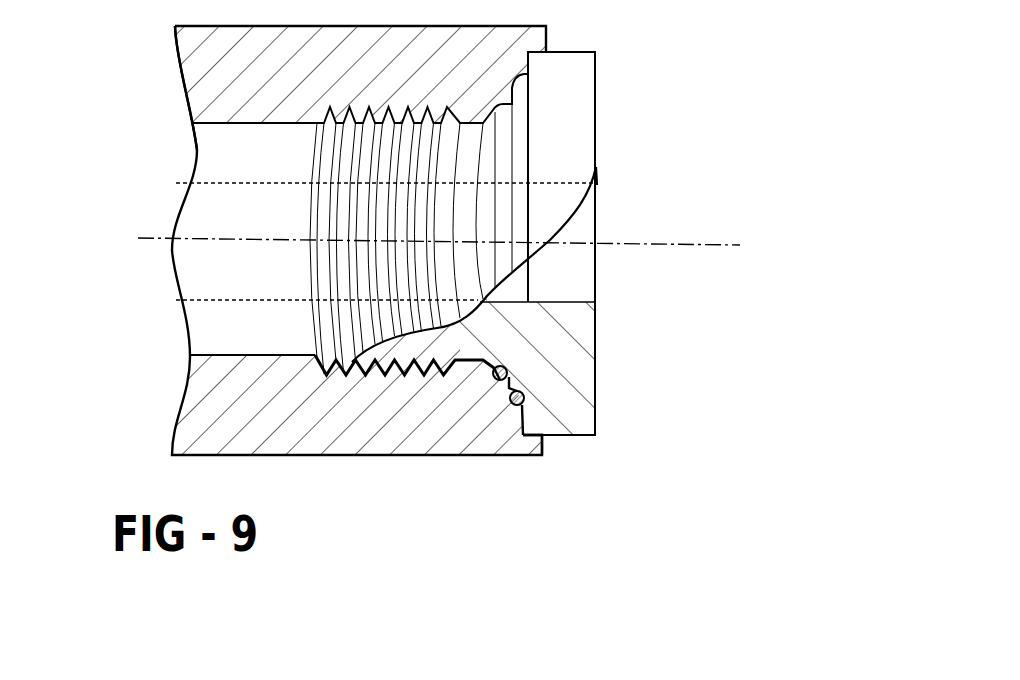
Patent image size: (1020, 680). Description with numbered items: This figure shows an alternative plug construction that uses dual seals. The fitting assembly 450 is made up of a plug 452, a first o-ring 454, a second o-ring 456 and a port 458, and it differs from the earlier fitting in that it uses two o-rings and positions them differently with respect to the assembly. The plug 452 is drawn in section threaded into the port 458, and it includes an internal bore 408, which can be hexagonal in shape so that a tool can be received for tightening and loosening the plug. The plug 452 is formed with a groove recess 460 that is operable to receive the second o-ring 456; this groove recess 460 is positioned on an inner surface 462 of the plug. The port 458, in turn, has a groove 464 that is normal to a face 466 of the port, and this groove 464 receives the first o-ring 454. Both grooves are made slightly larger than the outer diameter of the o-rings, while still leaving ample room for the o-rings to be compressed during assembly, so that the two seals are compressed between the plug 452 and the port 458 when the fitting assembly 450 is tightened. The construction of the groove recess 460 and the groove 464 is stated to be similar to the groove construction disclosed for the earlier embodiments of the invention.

The fitting assembly 450 is at (174, 212).
The plug 452 is at (587, 77).
The internal bore 408 is at (597, 187).
The groove recess 460 is at (503, 365).
The second o-ring 456 is at (510, 365).
The first o-ring 454 is at (526, 393).
The face 466 is at (524, 417).
The groove 464 is at (510, 407).
The inner surface 462 is at (494, 378).
The port 458 is at (377, 442).